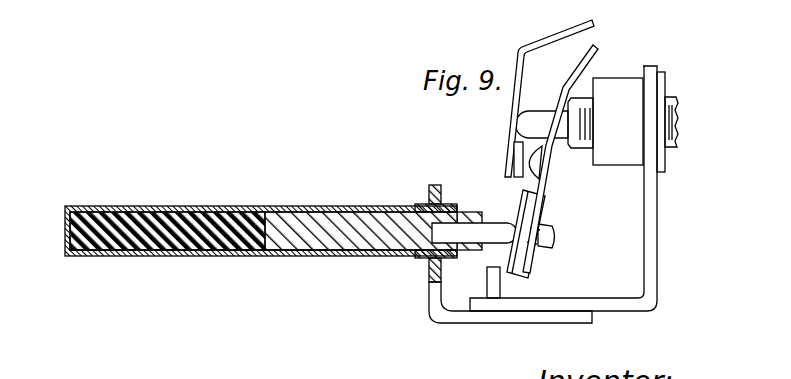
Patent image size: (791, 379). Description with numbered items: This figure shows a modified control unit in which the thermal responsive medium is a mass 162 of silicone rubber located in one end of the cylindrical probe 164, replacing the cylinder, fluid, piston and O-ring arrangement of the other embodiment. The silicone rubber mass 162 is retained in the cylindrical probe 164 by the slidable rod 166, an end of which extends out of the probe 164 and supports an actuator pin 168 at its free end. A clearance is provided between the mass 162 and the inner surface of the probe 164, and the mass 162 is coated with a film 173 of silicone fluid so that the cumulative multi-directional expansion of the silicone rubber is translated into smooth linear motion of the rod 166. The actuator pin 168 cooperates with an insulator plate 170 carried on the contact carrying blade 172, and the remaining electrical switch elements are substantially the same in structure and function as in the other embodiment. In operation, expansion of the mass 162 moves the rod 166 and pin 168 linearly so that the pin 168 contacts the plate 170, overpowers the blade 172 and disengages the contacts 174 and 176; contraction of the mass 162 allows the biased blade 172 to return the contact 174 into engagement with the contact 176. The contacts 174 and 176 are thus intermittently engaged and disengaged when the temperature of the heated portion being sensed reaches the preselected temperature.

The mass of silicone rubber 162 is at (155, 197).
The cylindrical probe 164 is at (253, 197).
The slidable rod 166 is at (360, 217).
The actuator pin 168 is at (493, 224).
The insulator plate 170 is at (527, 203).
The contact carrying blade 172 is at (565, 80).
The film of silicone fluid 173 is at (160, 252).
The contact 174 is at (538, 160).
The contact 176 is at (515, 148).